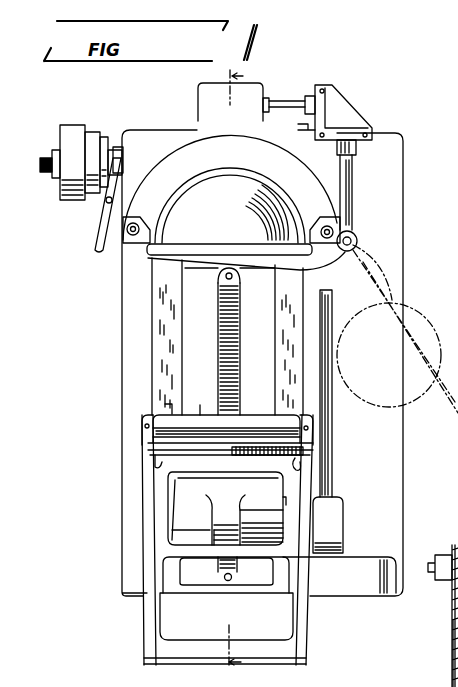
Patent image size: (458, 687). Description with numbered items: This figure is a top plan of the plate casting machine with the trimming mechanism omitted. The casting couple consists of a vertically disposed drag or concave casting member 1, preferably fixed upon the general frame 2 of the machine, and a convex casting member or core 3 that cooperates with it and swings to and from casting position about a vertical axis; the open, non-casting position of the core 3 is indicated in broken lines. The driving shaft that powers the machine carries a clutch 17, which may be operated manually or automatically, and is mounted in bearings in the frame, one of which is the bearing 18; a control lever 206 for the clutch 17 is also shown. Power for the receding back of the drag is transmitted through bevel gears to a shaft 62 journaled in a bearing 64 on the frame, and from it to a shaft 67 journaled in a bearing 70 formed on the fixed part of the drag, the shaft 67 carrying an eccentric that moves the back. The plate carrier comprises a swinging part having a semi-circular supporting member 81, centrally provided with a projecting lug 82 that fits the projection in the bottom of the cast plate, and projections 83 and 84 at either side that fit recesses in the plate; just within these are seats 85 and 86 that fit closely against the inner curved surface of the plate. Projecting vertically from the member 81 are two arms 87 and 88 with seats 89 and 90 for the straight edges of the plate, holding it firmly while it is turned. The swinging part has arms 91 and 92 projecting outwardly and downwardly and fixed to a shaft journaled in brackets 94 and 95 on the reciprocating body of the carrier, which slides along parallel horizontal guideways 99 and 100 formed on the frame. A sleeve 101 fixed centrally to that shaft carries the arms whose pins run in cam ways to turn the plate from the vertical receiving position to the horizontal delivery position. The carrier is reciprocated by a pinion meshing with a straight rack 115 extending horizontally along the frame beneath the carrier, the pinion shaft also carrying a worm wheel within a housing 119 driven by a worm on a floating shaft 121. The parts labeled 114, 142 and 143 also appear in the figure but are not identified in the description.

The drag or concave casting member 1 is at (190, 137).
The general frame 2 is at (405, 233).
The convex casting member or core 3 is at (446, 323).
The clutch 17 is at (107, 140).
The bearing 18 is at (118, 151).
The shaft 62 is at (355, 182).
The bearing 64 is at (362, 153).
The shaft 67 is at (287, 100).
The bearing 70 is at (319, 85).
The semi-circular member 81 is at (197, 453).
The projecting lug 82 is at (230, 453).
The projection 83 is at (150, 448).
The projection 84 is at (303, 452).
The projection or seat 85 is at (157, 477).
The projection or seat 86 is at (297, 470).
The arm 87 is at (286, 502).
The arm 88 is at (160, 508).
The seat 89 is at (304, 538).
The seat 90 is at (150, 536).
The arm 91 is at (144, 428).
The arm 92 is at (305, 420).
The bracket 94 is at (167, 410).
The bracket 95 is at (285, 412).
The guideway 99 is at (155, 311).
The guideway 100 is at (302, 295).
The sleeve 101 is at (200, 412).
The slot 114 is at (220, 518).
The straight rack 115 is at (218, 327).
The housing 119 is at (343, 522).
The floating shaft 121 is at (334, 300).
The control lever 206 is at (100, 223).
The strip 142 is at (455, 640).
The fitting 143 is at (455, 598).